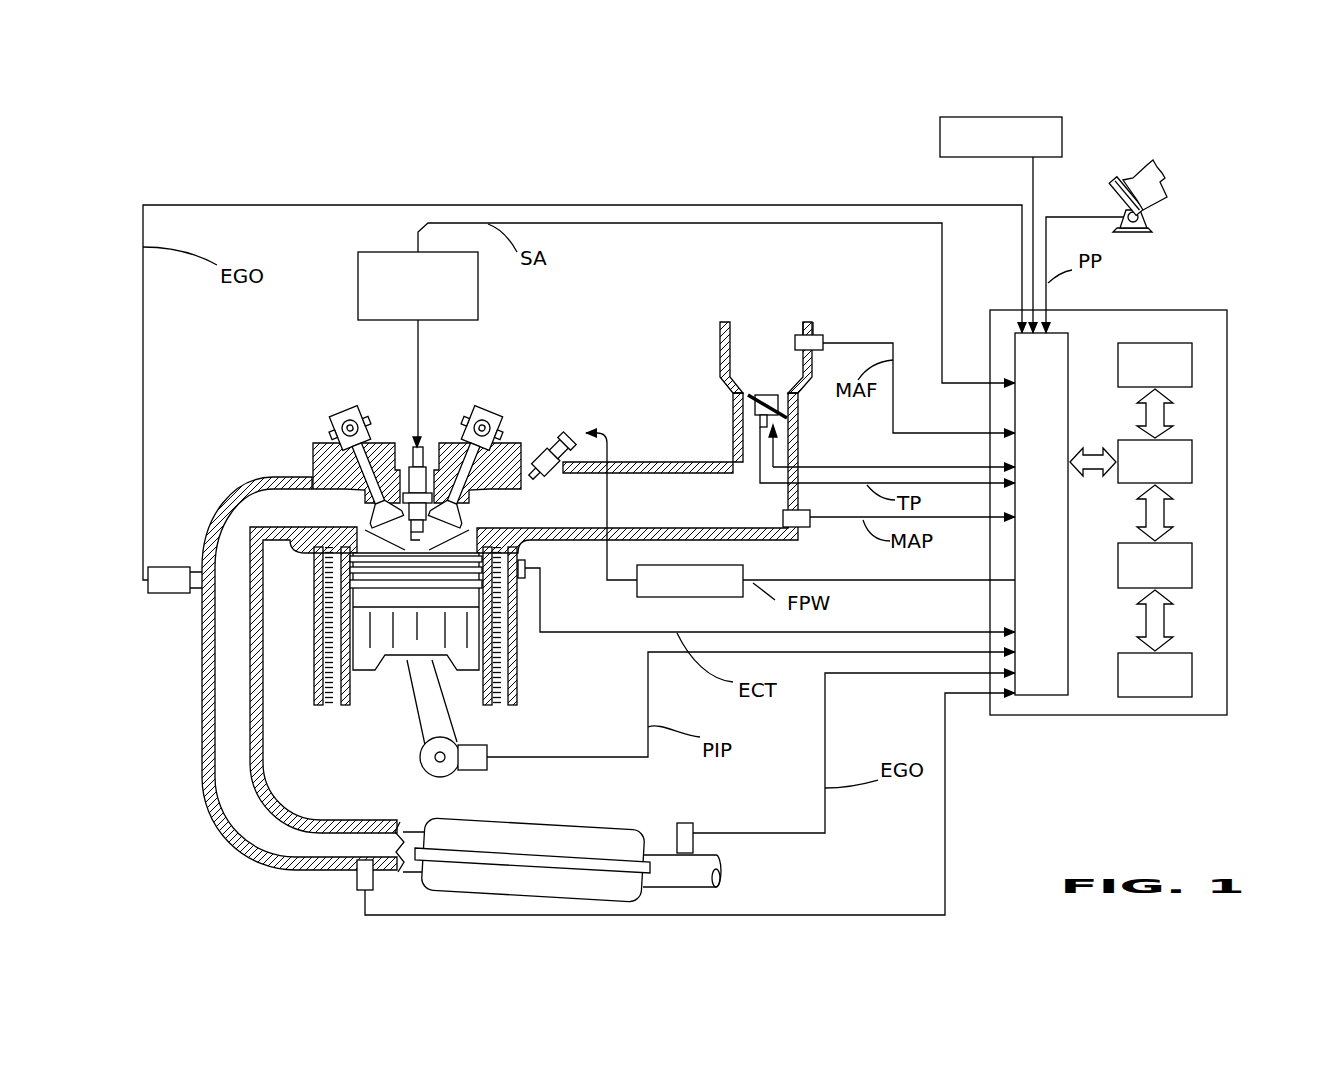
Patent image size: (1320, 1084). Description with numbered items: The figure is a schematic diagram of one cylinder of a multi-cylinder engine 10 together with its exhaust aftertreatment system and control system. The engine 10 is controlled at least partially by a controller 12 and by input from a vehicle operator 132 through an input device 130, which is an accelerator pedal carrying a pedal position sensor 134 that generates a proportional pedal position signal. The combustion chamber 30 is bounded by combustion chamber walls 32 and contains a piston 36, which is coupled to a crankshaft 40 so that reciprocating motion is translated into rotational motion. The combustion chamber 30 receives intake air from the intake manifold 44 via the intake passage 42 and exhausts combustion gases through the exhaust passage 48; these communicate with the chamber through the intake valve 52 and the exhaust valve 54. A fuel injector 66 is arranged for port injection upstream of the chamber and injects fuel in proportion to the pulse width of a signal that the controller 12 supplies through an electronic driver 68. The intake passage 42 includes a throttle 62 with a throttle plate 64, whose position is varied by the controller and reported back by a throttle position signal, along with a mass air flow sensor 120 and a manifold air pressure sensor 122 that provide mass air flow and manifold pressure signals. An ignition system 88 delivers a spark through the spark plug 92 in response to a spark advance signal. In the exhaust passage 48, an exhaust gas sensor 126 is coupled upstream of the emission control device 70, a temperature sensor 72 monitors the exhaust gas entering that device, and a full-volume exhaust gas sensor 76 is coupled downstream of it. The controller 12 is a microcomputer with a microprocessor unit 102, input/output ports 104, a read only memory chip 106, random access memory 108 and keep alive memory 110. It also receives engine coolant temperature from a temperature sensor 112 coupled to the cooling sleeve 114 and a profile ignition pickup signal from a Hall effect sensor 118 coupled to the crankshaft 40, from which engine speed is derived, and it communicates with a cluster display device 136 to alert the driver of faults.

The engine 10 is at (243, 388).
The controller 12 is at (1217, 310).
The combustion chamber 30 is at (415, 547).
The combustion chamber walls 32 is at (357, 687).
The piston 36 is at (420, 662).
The crankshaft 40 is at (428, 775).
The intake passage 42 is at (779, 372).
The intake manifold 44 is at (713, 517).
The exhaust passage 48 is at (294, 520).
The intake valve 52 is at (457, 518).
The exhaust valve 54 is at (370, 523).
The throttle 62 is at (783, 400).
The throttle plate 64 is at (752, 402).
The fuel injector 66 is at (560, 442).
The electronic driver 68 is at (645, 597).
The emission control device 70 is at (600, 830).
The temperature sensor 72 is at (360, 875).
The full-volume exhaust gas sensor 76 is at (687, 822).
The ignition system 88 is at (368, 252).
The spark plug 92 is at (420, 462).
The microprocessor unit 102 is at (1193, 453).
The input/output ports 104 is at (1070, 343).
The read only memory chip 106 is at (1192, 358).
The random access memory 108 is at (1193, 563).
The keep alive memory 110 is at (1193, 668).
The temperature sensor 112 is at (527, 567).
The cooling sleeve 114 is at (520, 657).
The Hall effect sensor 118 is at (473, 770).
The mass air flow sensor 120 is at (818, 333).
The manifold air pressure sensor 122 is at (803, 528).
The exhaust gas sensor 126 is at (148, 570).
The input device 130 is at (1113, 190).
The vehicle operator 132 is at (1167, 178).
The pedal position sensor 134 is at (1147, 220).
The cluster display device 136 is at (940, 140).